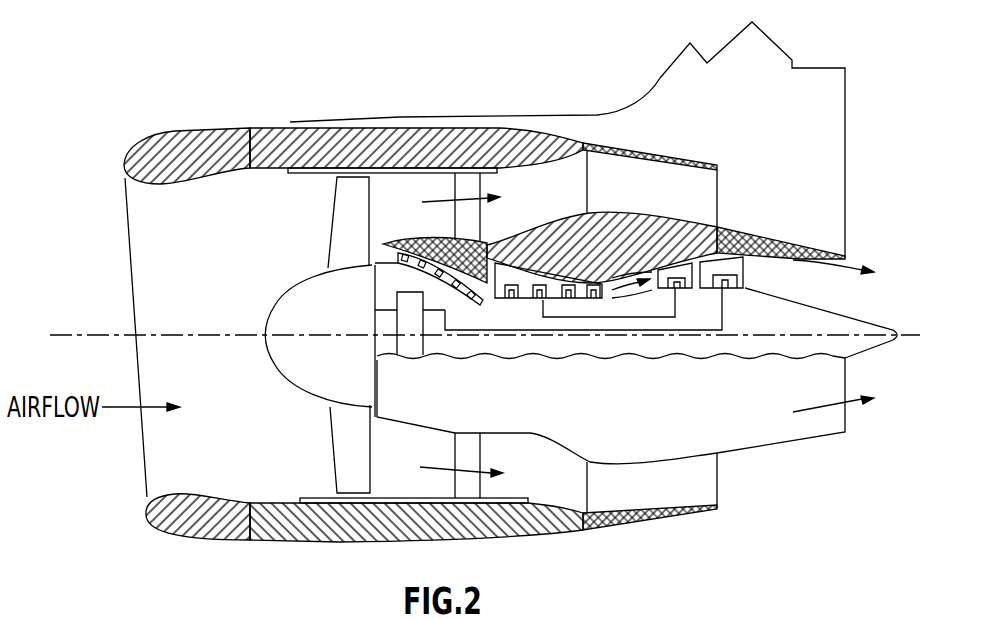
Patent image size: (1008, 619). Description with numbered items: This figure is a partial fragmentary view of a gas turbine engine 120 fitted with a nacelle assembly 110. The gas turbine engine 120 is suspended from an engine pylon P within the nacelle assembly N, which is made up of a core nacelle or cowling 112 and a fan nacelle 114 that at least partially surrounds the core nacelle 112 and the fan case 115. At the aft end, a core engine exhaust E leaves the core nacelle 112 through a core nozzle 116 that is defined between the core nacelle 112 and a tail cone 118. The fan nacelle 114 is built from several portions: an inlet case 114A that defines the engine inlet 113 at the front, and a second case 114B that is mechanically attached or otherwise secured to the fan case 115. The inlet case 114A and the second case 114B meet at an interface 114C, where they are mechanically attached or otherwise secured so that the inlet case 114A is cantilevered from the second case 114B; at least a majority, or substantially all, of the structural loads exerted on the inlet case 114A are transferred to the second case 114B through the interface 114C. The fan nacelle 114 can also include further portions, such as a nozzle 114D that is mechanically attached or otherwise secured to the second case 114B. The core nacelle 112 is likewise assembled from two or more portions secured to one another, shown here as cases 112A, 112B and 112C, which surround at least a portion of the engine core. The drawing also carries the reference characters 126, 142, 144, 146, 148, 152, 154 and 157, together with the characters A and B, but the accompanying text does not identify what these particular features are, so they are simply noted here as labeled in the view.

The nacelle assembly 110 is at (205, 98).
The core nacelle 112 is at (748, 224).
The case 112A is at (440, 243).
The case 112B is at (640, 210).
The case 112C is at (770, 243).
The engine inlet 113 is at (125, 245).
The fan nacelle 114 is at (279, 118).
The inlet case 114A is at (145, 143).
The second case 114B is at (372, 137).
The interface 114C is at (253, 128).
The nozzle 114D is at (655, 150).
The fan case 115 is at (288, 172).
The core nozzle 116 is at (848, 258).
The tail cone 118 is at (850, 312).
The gas turbine engine 120 is at (322, 450).
The combustor section 126 is at (640, 300).
The fan blades 142 is at (321, 246).
The compressor section 144 is at (467, 292).
The turbine section 146 is at (741, 289).
The shaft 148 is at (407, 337).
The low pressure compressor 152 is at (531, 290).
The high pressure turbine 154 is at (693, 290).
The bypass flow 157 is at (470, 223).
The nacelle assembly N is at (455, 108).
The engine pylon P is at (797, 45).
The engine axis A is at (908, 340).
The bypass airflow B is at (443, 467).
The core engine exhaust E is at (843, 410).